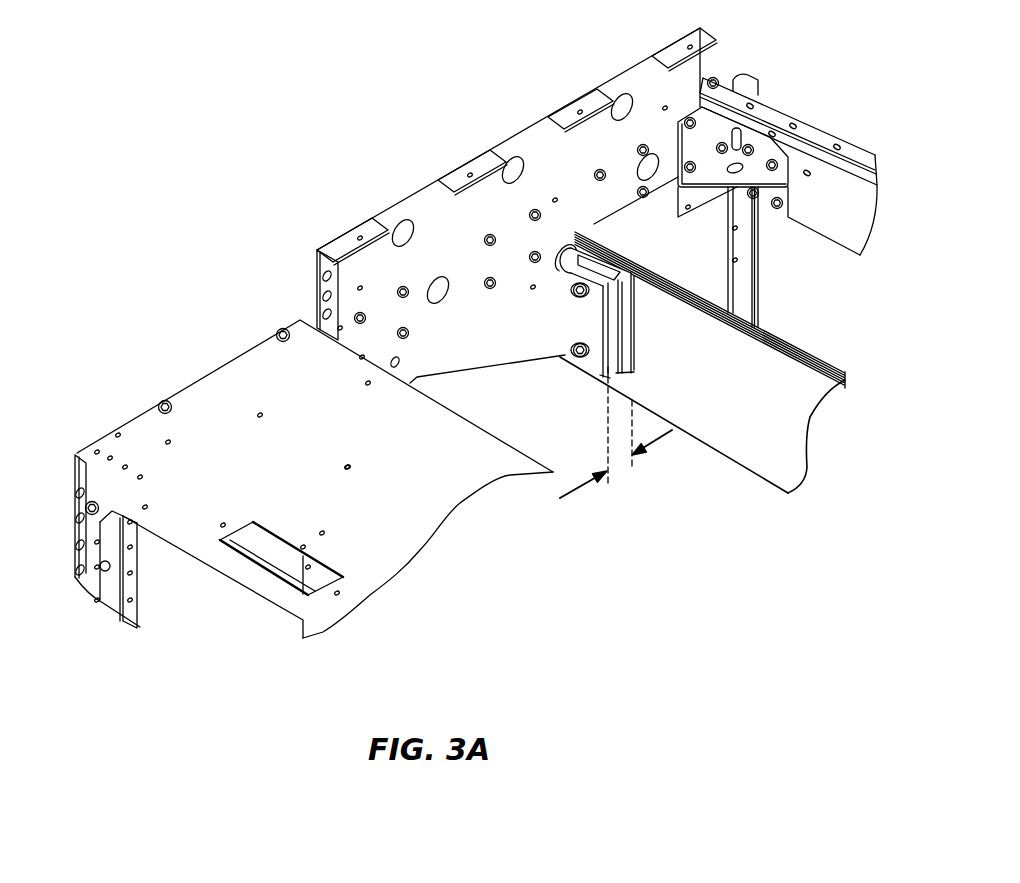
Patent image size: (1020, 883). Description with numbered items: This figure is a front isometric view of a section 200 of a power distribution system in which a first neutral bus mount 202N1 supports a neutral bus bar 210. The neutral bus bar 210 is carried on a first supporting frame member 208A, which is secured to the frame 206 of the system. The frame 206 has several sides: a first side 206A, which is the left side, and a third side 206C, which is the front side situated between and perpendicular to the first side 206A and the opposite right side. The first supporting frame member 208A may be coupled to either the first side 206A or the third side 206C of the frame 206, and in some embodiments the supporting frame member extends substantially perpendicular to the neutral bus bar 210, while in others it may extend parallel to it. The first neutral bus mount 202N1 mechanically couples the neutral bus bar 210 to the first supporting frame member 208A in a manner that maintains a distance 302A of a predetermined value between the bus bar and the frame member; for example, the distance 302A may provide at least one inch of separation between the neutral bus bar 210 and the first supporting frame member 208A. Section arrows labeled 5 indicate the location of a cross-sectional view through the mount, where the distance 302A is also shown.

The section 200 is at (362, 47).
The first supporting frame member 208A is at (513, 140).
The first neutral bus mount 202N1 is at (567, 247).
The neutral bus bar 210 is at (648, 256).
The frame 206 is at (392, 590).
The first side 206A is at (203, 378).
The third side 206C is at (187, 548).
The distance 302A is at (583, 492).
The section line 5- 5 is at (787, 353).